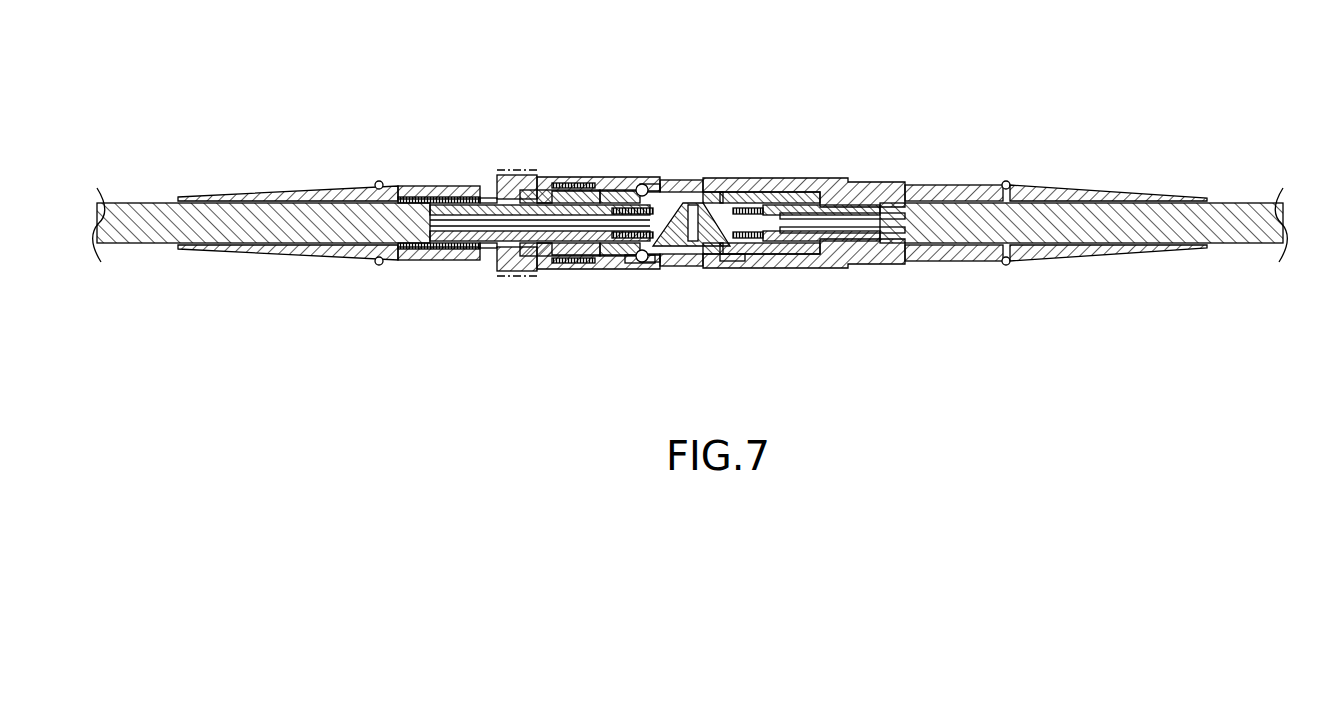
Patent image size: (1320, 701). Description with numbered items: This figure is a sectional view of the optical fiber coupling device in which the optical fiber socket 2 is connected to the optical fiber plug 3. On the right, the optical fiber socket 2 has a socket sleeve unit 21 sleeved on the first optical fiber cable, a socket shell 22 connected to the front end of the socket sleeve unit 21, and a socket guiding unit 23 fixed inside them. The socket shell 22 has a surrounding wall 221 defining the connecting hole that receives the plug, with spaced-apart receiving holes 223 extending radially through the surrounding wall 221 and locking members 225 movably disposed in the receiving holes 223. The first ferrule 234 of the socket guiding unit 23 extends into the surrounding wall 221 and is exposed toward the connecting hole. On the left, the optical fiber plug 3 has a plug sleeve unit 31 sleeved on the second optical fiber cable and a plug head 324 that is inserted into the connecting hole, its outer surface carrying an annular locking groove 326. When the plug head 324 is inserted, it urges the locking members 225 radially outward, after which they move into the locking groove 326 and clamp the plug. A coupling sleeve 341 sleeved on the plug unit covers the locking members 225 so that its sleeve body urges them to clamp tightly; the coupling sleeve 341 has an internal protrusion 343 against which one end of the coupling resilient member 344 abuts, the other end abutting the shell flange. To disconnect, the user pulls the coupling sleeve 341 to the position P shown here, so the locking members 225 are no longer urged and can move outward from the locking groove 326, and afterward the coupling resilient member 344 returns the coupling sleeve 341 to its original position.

The optical fiber socket 2 is at (962, 125).
The socket sleeve unit 21 is at (1073, 175).
The socket shell 22 is at (696, 170).
The socket guiding unit 23 is at (785, 175).
The surrounding wall 221 is at (700, 262).
The receiving holes 223 is at (645, 187).
The locking members 225 is at (640, 185).
The first ferrule 234 is at (730, 262).
The optical fiber plug 3 is at (397, 125).
The plug sleeve unit 31 is at (303, 270).
The plug head 324 is at (720, 188).
The locking groove 326 is at (637, 265).
The coupling sleeve 341 is at (575, 155).
The internal protrusion 343 is at (615, 185).
The coupling resilient member 344 is at (555, 178).
The position P is at (516, 275).